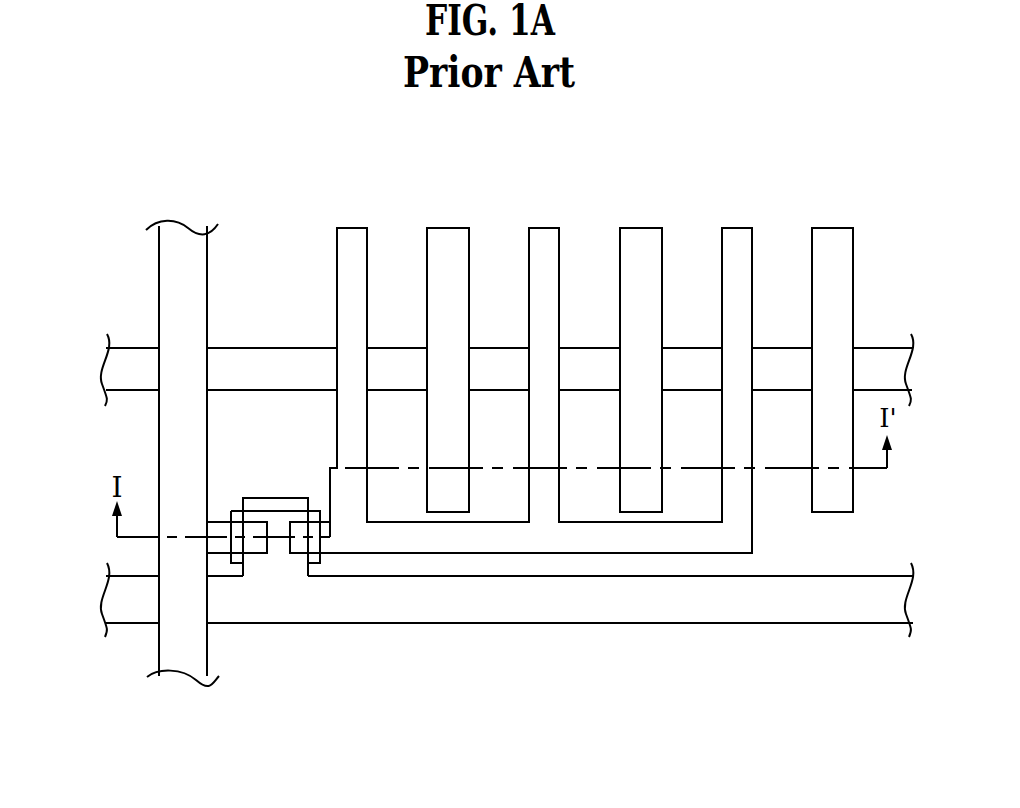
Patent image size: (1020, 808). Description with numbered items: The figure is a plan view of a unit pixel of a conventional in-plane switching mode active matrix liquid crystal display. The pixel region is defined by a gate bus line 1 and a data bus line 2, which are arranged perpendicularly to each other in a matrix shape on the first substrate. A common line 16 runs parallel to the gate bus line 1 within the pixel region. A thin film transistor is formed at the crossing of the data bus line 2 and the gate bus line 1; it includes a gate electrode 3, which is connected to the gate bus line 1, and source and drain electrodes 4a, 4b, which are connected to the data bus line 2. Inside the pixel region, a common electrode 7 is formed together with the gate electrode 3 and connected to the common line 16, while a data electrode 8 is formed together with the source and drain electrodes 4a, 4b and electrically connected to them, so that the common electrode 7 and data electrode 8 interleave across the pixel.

The gate bus line 1 is at (591, 610).
The data bus line 2 is at (166, 285).
The gate electrode 3 is at (278, 573).
The source electrode 4a is at (223, 527).
The drain electrode 4b is at (318, 540).
The common electrode 7 is at (451, 236).
The data electrode 8 is at (542, 236).
The common line 16 is at (876, 357).